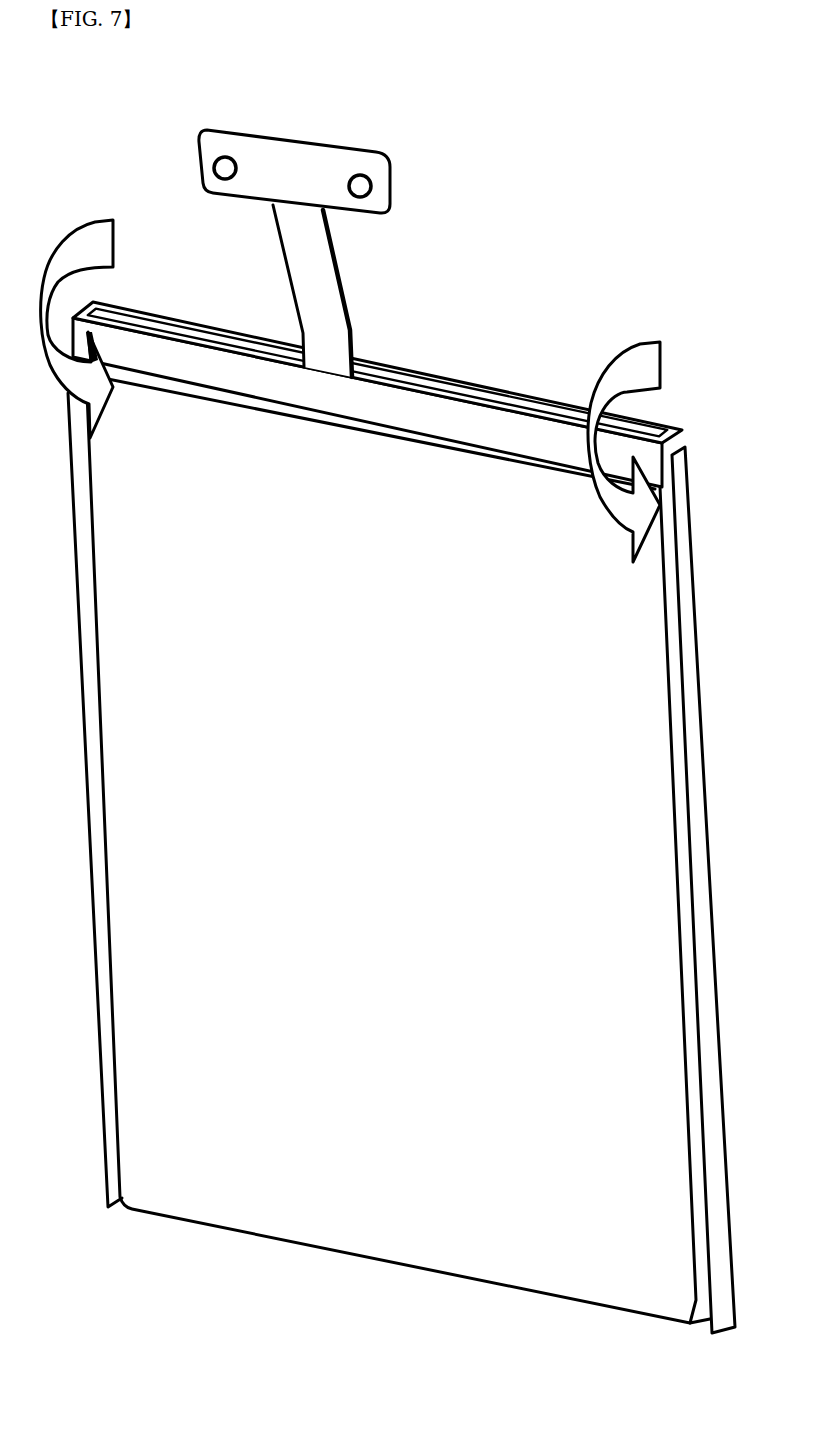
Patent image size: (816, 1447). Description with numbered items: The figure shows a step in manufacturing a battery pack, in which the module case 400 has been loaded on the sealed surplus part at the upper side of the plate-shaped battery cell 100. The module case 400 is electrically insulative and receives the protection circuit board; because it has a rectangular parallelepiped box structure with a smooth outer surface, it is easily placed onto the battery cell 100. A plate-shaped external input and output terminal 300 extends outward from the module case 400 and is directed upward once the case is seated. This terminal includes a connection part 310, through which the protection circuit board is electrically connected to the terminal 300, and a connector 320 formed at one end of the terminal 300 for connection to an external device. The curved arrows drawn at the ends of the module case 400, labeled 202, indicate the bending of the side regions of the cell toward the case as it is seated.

The battery cell 100 is at (384, 968).
The side sealing portion (folded) 202 is at (92, 244).
The external input and output terminal 300 is at (437, 233).
The connection part 310 is at (318, 270).
The connector 320 is at (315, 155).
The module case 400 is at (308, 386).